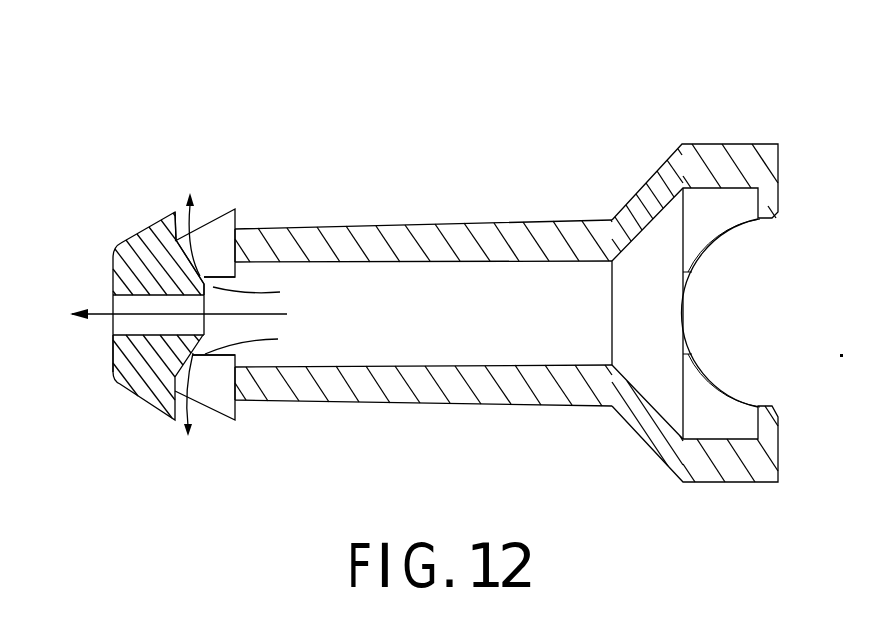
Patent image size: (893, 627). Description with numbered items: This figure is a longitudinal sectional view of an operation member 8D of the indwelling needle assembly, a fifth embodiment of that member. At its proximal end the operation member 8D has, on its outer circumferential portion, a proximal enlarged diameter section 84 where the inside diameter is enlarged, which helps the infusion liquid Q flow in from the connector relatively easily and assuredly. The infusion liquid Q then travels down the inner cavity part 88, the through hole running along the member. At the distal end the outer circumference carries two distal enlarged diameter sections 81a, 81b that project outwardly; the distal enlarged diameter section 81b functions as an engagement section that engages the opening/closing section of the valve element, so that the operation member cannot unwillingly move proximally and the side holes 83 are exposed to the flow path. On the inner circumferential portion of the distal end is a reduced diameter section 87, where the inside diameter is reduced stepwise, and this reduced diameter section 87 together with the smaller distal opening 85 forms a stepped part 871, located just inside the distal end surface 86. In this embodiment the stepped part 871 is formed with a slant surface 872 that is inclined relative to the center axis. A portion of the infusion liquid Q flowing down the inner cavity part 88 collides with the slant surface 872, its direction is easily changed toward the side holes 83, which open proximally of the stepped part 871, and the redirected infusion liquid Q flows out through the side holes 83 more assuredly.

The operation member 8D is at (388, 125).
The inner cavity part 88 is at (452, 325).
The proximal enlarged diameter section 84 is at (718, 465).
The distal enlarged diameter section 81a is at (140, 396).
The distal enlarged diameter section 81b is at (203, 408).
The distal opening 85 is at (112, 303).
The distal end surface 86 is at (112, 348).
The stepped part 871 is at (186, 286).
The slant surface 872 is at (190, 274).
The side holes 83 is at (211, 247).
The reduced diameter section 87 is at (232, 277).
The infusion liquid Q is at (213, 287).